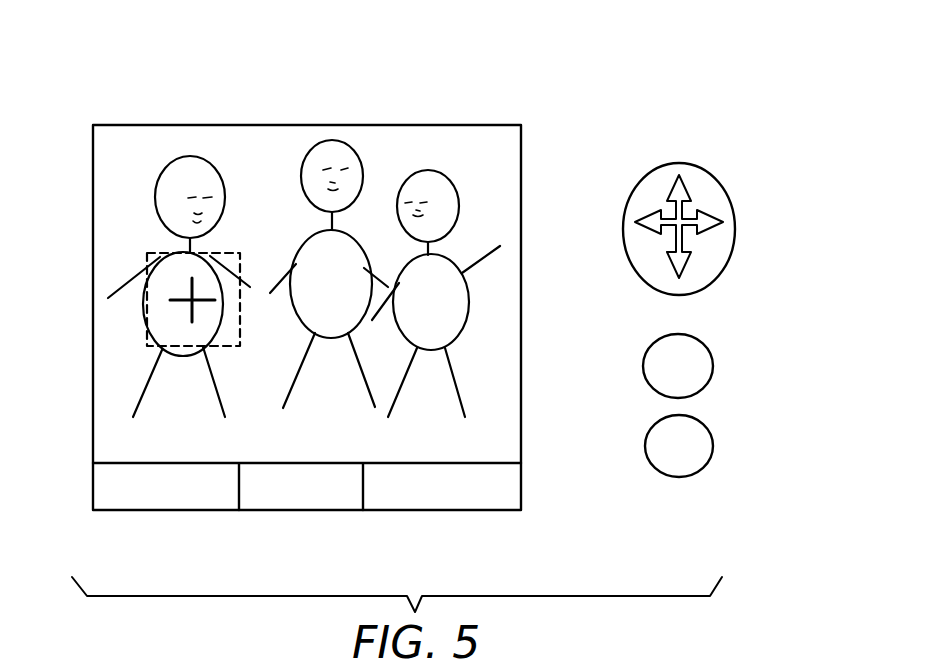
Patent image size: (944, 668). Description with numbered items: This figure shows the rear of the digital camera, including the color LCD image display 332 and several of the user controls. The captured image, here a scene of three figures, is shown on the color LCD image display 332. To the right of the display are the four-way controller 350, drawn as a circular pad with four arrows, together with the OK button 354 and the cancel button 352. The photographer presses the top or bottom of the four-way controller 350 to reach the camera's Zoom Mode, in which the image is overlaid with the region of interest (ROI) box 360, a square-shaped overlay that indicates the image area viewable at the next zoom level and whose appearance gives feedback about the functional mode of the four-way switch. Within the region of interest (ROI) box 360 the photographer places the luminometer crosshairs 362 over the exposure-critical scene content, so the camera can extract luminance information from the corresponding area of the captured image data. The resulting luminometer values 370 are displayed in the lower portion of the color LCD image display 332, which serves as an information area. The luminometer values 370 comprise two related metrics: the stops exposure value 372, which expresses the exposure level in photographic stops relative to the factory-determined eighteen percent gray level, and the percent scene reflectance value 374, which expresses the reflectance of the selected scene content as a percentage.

The color LCD image display 332 is at (282, 125).
The region of interest (ROI) box 360 is at (147, 262).
The luminometer crosshairs 362 is at (190, 307).
The luminometer values 370 is at (522, 483).
The stops exposure value 372 is at (302, 498).
The percent scene reflectance value 374 is at (438, 497).
The four-way controller 350 is at (733, 207).
The OK button 354 is at (713, 363).
The cancel button 352 is at (713, 445).